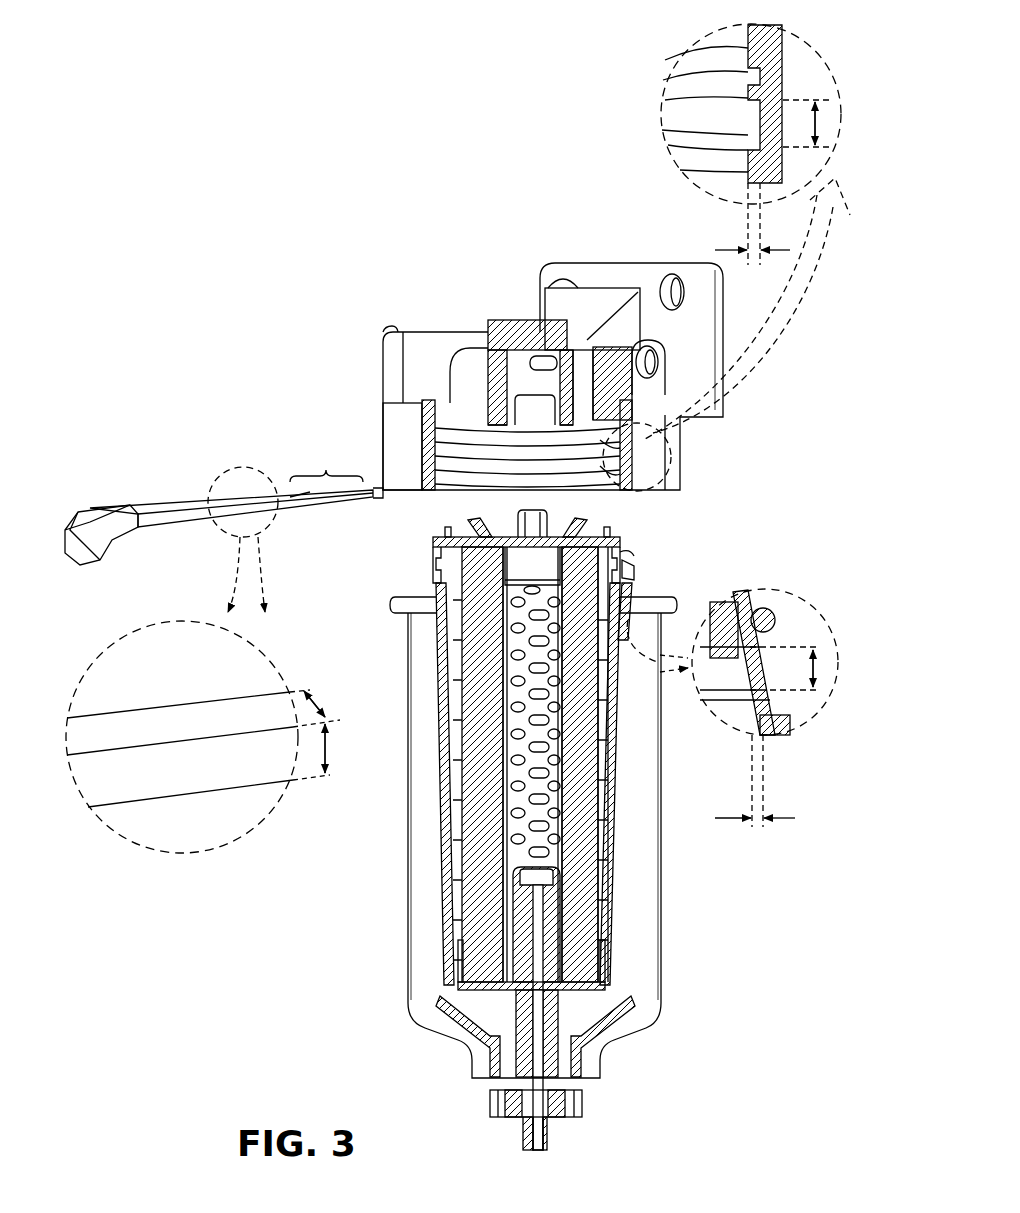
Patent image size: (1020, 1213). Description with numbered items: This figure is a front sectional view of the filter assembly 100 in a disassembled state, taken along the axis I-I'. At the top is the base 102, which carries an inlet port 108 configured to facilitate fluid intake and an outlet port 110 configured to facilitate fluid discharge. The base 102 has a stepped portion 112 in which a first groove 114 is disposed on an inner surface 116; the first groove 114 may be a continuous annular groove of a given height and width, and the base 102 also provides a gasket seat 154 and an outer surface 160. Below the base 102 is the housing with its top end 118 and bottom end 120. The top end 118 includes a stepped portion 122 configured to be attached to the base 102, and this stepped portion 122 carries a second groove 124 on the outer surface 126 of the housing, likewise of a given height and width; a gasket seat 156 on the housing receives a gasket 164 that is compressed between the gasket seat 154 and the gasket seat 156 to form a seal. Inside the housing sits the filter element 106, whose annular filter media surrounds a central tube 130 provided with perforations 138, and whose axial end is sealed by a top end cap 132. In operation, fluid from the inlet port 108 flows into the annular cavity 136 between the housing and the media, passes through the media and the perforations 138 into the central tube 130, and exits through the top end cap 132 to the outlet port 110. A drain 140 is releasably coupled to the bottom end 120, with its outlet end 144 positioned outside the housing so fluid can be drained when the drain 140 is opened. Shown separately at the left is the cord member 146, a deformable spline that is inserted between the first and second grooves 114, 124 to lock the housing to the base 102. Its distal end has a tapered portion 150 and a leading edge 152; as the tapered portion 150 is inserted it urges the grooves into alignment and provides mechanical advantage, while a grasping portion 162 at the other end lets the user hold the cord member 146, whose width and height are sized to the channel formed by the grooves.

The filter assembly 100 is at (432, 212).
The base 102 is at (503, 312).
The filter element 106 is at (624, 785).
The inlet port 108 is at (650, 362).
The outlet port 110 is at (517, 327).
The stepped portion 112 is at (622, 452).
The first groove 114 is at (622, 476).
The inner surface 116 is at (533, 442).
The top end 118 is at (377, 614).
The bottom end 120 is at (409, 1016).
The stepped portion 122 is at (635, 589).
The second groove 124 is at (636, 572).
The outer surface 126 is at (426, 590).
The central tube 130 is at (520, 777).
The top end cap 132 is at (605, 526).
The annular cavity 136 is at (460, 880).
The perforations 138 is at (512, 681).
The drain 140 is at (544, 1085).
The outlet end 144 is at (542, 1148).
The cord member 146 is at (193, 514).
The tapered portion 150 is at (326, 470).
The leading edge 152 is at (368, 488).
The gasket seat 154 is at (784, 66).
The gasket seat 156 is at (630, 548).
The outer surface 160 is at (400, 439).
The grasping portion 162 is at (80, 565).
The gasket 164 is at (783, 622).